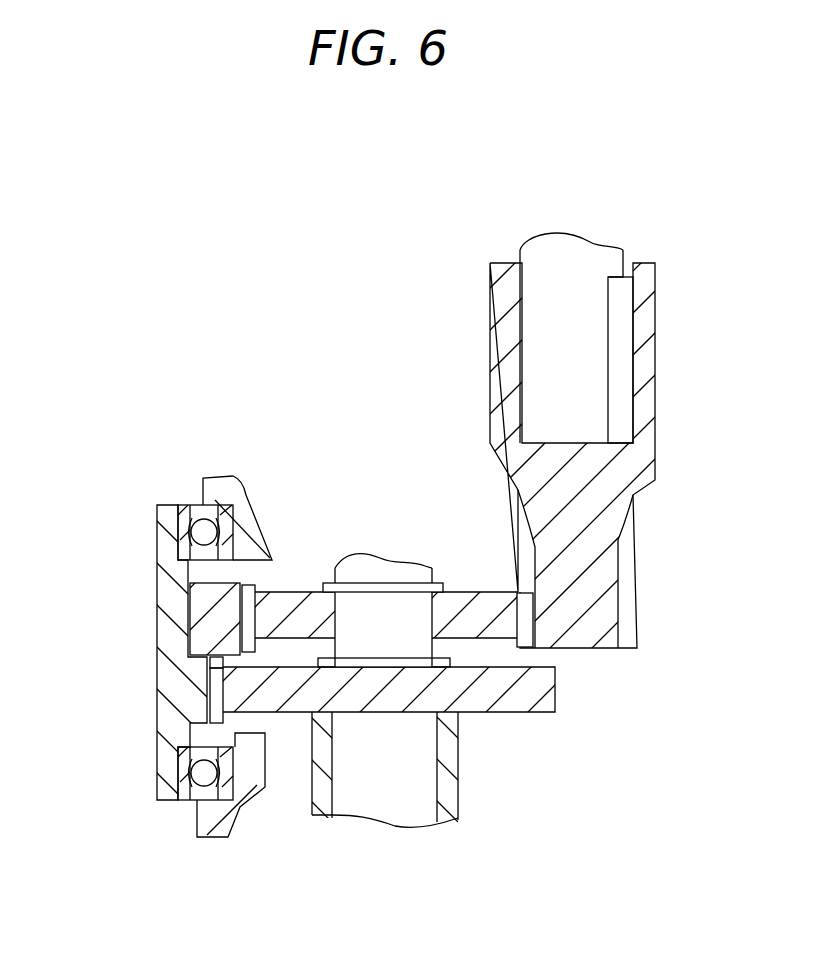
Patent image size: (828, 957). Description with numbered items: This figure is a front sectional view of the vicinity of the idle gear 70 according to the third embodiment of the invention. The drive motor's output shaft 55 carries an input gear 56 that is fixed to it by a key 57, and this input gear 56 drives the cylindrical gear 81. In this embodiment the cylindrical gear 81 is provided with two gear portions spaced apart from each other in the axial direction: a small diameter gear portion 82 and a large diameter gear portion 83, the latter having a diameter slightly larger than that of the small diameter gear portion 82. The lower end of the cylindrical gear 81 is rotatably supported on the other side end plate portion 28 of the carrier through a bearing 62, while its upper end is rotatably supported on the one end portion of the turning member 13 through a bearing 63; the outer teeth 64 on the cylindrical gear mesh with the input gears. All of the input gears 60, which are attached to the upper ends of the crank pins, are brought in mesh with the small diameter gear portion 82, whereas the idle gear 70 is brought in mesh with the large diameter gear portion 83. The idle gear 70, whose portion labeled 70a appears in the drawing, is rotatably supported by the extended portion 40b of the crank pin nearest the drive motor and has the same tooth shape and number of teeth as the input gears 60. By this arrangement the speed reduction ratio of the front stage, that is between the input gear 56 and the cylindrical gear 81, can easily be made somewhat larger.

The turning member 13 is at (222, 482).
The other side end plate portion 28 is at (222, 832).
The extended portion 40b is at (383, 567).
The output shaft 55 is at (577, 243).
The input gear 56 is at (612, 568).
The key 57 is at (625, 331).
The input gear 60 is at (515, 712).
The bearing 62 is at (200, 776).
The bearing 63 is at (173, 533).
The outer teeth 64 is at (212, 662).
The idle gear 70 is at (463, 593).
The tube portion 70a is at (422, 815).
The cylindrical gear 81 is at (414, 550).
The small diameter gear portion 82 is at (168, 572).
The large diameter gear portion 83 is at (200, 620).